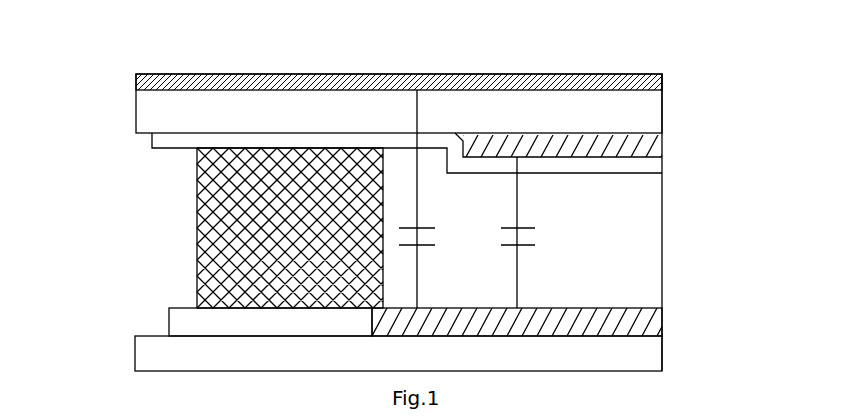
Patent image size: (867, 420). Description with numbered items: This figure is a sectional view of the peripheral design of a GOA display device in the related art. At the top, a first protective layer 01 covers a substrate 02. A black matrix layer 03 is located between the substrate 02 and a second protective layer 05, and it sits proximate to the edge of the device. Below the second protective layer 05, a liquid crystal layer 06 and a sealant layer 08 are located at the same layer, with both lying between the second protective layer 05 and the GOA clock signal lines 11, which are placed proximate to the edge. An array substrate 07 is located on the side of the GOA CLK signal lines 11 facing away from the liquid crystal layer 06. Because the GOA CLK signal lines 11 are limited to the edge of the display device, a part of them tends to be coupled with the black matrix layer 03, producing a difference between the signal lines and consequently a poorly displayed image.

The first protective layer 01 is at (137, 74).
The substrate 02 is at (157, 108).
The black matrix layer 03 is at (630, 150).
The second protective layer 05 is at (153, 141).
The liquid crystal layer 06 is at (628, 241).
The array substrate 07 is at (186, 348).
The sealant layer 08 is at (212, 220).
The GOA clock (CLK) signal lines 11 is at (623, 313).